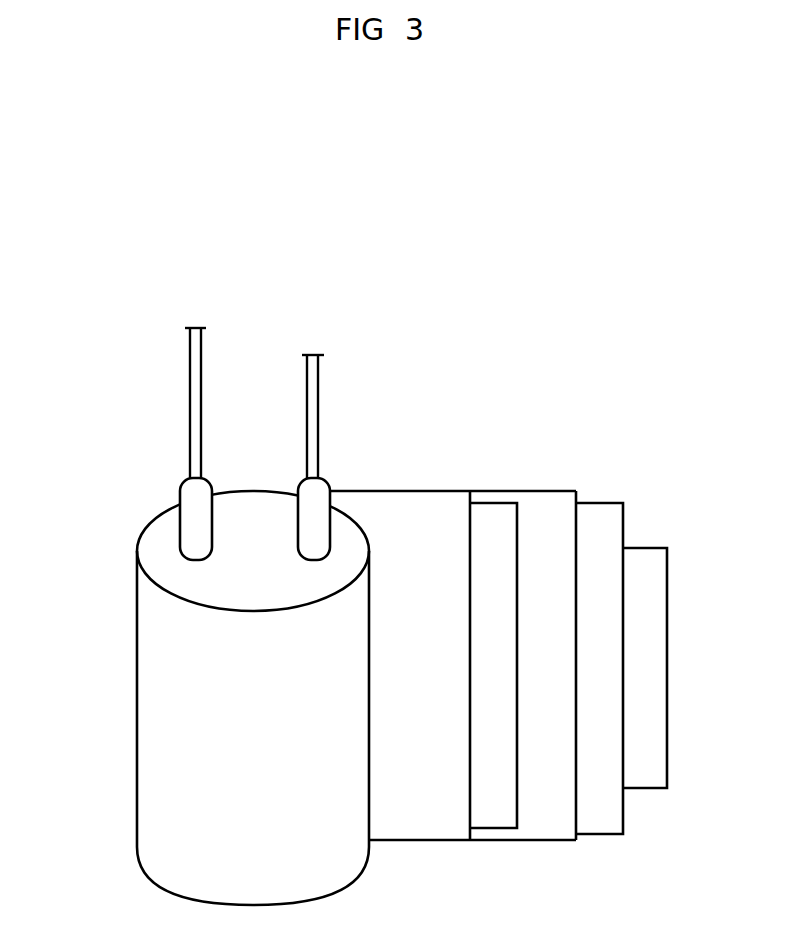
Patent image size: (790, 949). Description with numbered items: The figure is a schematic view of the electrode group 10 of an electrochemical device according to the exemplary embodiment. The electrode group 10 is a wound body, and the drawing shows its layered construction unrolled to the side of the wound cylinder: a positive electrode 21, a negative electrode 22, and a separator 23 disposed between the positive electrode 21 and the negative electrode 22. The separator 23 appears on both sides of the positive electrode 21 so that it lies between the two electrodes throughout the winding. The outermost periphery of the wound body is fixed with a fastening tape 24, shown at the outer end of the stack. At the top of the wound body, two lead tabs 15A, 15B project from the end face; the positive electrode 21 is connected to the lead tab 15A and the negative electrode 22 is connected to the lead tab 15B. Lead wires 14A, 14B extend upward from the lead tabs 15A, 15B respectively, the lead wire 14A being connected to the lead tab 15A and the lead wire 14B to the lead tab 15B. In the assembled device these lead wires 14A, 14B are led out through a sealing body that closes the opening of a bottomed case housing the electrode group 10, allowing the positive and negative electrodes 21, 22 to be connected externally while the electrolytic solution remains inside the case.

The electrode group 10 is at (480, 325).
The lead wire 14A is at (197, 373).
The lead wire 14B is at (313, 364).
The lead tab 15A is at (193, 502).
The lead tab 15B is at (315, 502).
The positive electrode 21 is at (504, 805).
The negative electrode 22 is at (603, 822).
The separator 23 is at (432, 805).
The fastening tape 24 is at (644, 773).